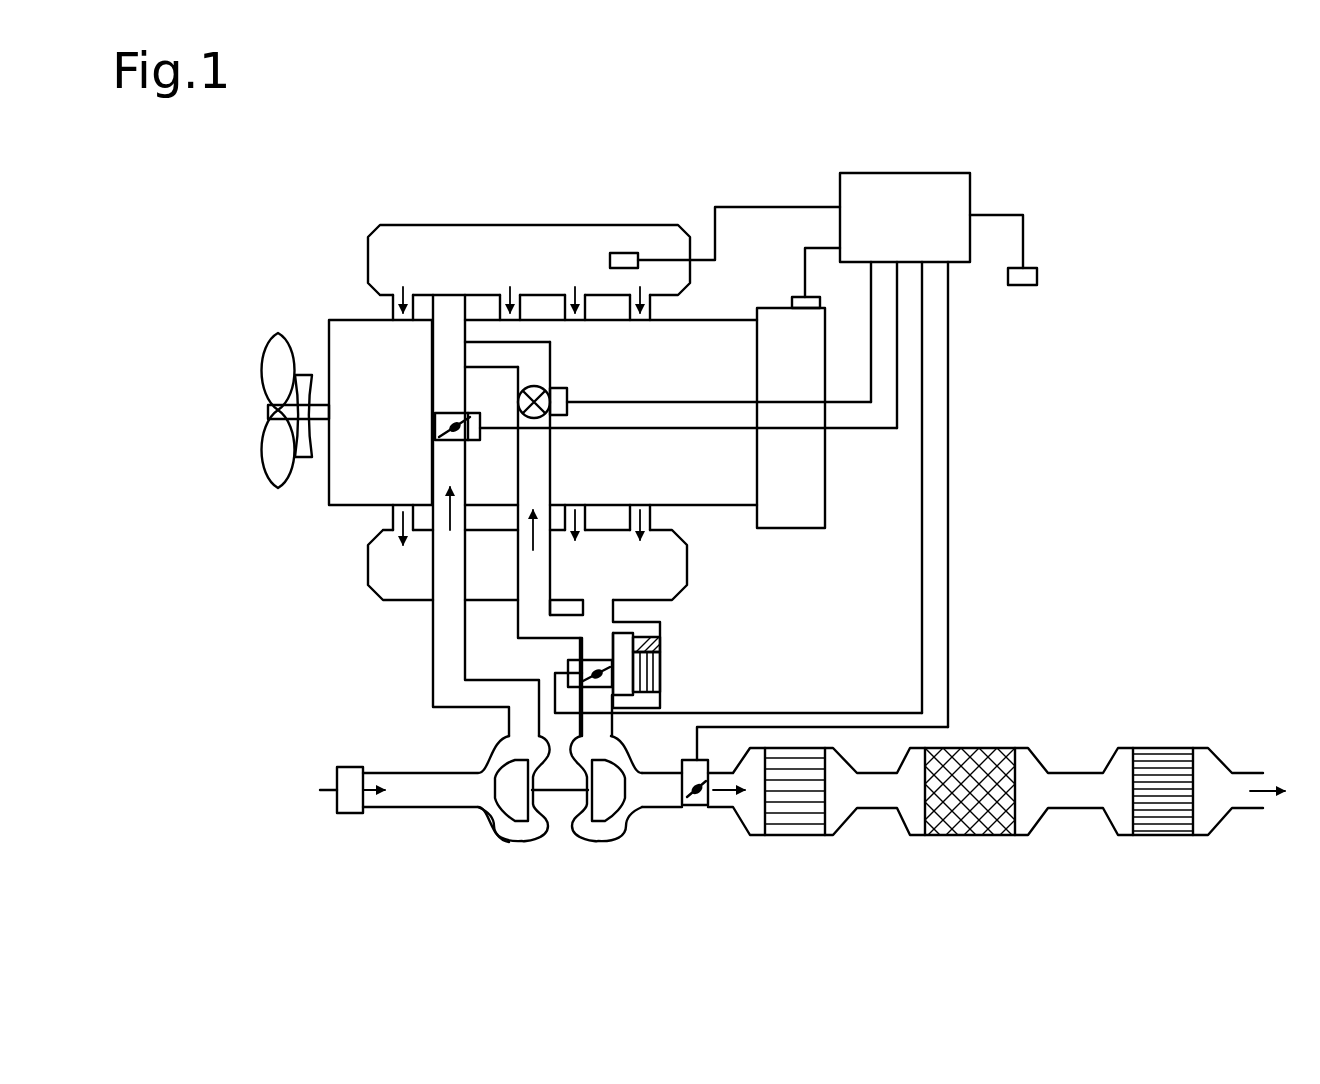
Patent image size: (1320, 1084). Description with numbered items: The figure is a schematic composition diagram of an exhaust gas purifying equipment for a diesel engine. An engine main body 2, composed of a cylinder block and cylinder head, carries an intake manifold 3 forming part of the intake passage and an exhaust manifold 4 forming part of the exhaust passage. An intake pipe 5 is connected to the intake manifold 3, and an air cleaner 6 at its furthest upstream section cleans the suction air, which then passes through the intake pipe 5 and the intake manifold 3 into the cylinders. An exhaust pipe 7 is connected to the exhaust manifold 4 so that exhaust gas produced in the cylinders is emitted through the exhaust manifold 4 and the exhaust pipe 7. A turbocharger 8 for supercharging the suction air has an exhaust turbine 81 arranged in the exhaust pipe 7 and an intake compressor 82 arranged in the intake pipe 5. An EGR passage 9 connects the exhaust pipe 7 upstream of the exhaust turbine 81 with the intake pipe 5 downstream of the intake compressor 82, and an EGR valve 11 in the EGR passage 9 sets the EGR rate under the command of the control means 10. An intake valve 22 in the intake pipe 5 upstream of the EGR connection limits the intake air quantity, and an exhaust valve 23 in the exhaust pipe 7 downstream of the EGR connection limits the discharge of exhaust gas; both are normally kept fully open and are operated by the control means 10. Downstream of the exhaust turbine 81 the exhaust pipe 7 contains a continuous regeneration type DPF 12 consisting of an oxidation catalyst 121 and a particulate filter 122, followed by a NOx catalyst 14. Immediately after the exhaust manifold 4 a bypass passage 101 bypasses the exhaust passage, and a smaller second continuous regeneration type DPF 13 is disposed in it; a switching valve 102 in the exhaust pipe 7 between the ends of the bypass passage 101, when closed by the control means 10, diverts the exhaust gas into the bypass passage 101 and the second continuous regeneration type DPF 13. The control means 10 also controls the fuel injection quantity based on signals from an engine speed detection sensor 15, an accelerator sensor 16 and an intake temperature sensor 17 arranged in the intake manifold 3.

The engine main body 2 is at (328, 492).
The intake manifold 3 is at (367, 250).
The exhaust manifold 4 is at (378, 602).
The intake pipe 5 is at (440, 462).
The air cleaner 6 is at (351, 814).
The exhaust pipe 7 is at (613, 730).
The turbocharger 8 is at (572, 829).
The EGR passage 9 is at (552, 478).
The control means 10 is at (958, 264).
The EGR valve 11 is at (567, 397).
The continuous regeneration type DPF 12 is at (891, 851).
The second continuous regeneration type DPF 13 is at (696, 668).
The NOx catalyst 14 is at (1163, 838).
The engine speed detection sensor 15 is at (792, 292).
The accelerator sensor 16 is at (1025, 287).
The intake temperature sensor 17 is at (610, 260).
The intake valve 22 is at (436, 425).
The exhaust valve 23 is at (691, 806).
The exhaust turbine 81 is at (615, 836).
The intake compressor 82 is at (495, 828).
The bypass passage 101 is at (650, 630).
The switching valve 102 is at (568, 662).
The oxidation catalyst 121 is at (825, 836).
The particulate filter 122 is at (970, 827).